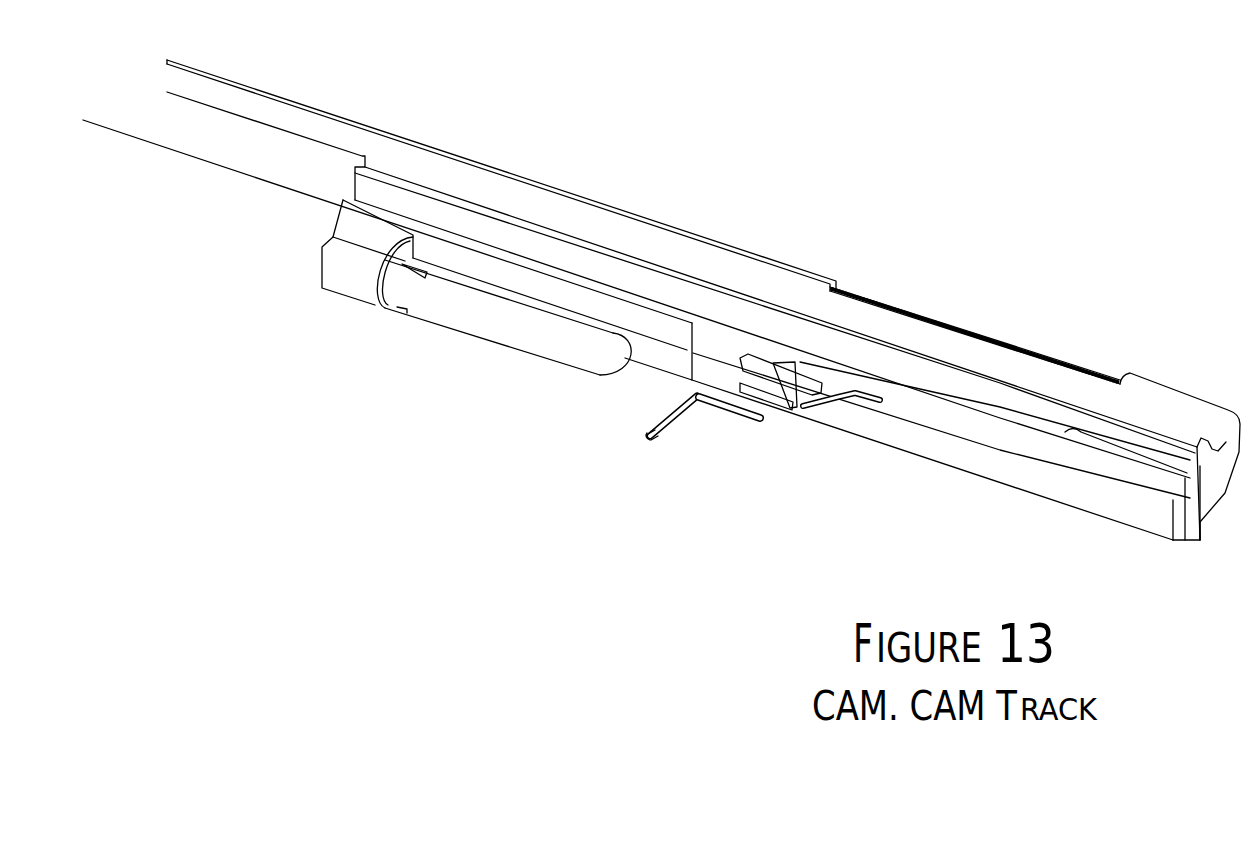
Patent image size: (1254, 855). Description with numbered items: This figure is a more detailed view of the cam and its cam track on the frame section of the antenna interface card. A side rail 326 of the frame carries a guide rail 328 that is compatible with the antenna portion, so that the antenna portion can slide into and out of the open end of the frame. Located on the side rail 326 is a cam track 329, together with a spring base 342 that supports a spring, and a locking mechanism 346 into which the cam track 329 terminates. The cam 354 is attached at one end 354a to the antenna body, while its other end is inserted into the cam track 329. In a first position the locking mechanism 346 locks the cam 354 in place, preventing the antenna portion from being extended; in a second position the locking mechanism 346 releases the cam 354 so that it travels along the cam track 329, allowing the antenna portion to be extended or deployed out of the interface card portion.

The side rail 326 is at (588, 192).
The guide rail 328 is at (955, 328).
The cam track 329 is at (1027, 480).
The spring base 342 is at (458, 326).
The locking mechanism 346 is at (822, 395).
The cam 354 is at (699, 405).
The end of the cam 354a is at (650, 440).